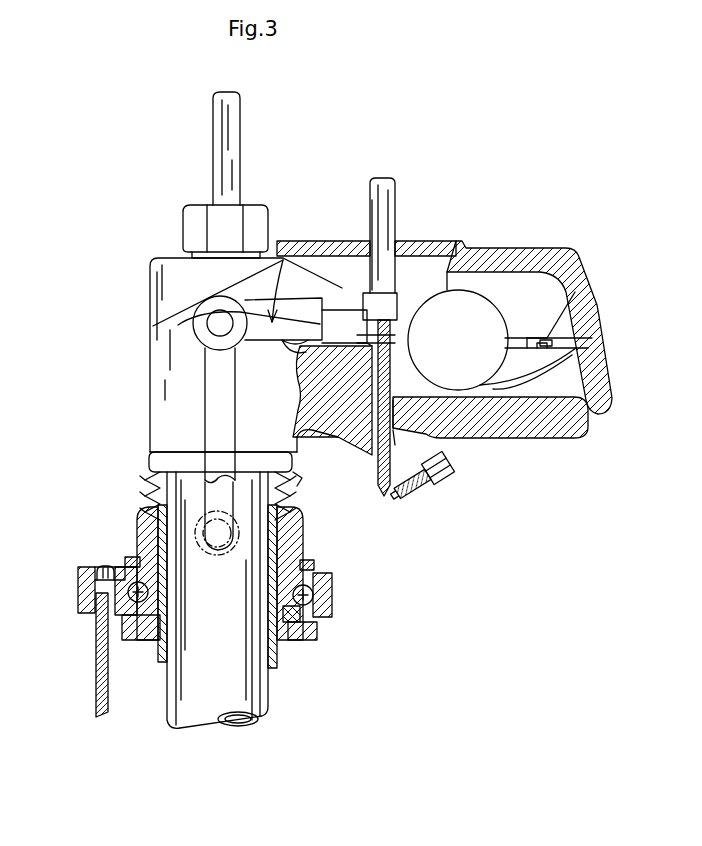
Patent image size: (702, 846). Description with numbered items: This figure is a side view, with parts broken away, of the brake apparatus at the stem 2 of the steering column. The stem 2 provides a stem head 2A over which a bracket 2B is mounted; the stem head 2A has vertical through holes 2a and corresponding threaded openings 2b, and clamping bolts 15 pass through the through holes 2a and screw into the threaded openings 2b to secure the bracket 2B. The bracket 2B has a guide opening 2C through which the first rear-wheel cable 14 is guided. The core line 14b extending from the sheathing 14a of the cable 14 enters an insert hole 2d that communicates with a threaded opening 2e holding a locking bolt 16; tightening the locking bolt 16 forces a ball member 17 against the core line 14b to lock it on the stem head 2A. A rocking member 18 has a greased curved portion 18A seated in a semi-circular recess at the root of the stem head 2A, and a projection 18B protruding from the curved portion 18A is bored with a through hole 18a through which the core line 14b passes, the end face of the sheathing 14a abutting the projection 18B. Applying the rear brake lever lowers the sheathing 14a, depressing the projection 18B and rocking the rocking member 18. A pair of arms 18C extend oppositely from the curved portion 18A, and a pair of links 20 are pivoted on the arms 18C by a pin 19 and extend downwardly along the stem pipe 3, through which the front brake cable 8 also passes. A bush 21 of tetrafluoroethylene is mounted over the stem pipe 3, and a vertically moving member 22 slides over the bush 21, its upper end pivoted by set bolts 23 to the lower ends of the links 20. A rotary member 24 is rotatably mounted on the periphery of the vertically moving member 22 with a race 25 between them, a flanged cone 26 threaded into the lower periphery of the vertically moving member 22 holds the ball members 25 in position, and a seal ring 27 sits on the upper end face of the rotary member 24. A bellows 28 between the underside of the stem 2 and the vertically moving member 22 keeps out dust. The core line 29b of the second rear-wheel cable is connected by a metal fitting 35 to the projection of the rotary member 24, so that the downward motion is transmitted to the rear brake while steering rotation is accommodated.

The stem 2 is at (602, 252).
The stem head 2A is at (536, 440).
The bracket 2B is at (547, 255).
The guide opening 2C is at (395, 250).
The vertical through hole 2a is at (558, 344).
The threaded opening 2b is at (540, 338).
The insert hole 2d is at (448, 432).
The threaded opening 2e is at (410, 482).
The stem pipe 3 is at (190, 490).
The brake cable 8 is at (222, 150).
The first cable 14 is at (396, 192).
The sheathing 14a is at (370, 192).
The core line 14b is at (386, 492).
The clamping bolt 15 is at (556, 346).
The locking bolt 16 is at (448, 475).
The ball member 17 is at (377, 458).
The rocking member 18 is at (284, 255).
The curved portion 18A is at (316, 487).
The projection 18B is at (345, 262).
The arm 18C is at (200, 320).
The through hole 18a is at (400, 320).
The pin 19 is at (210, 312).
The link 20 is at (212, 405).
The bush 21 is at (162, 530).
The vertically moving member 22 is at (142, 545).
The set bolt 23 is at (216, 543).
The rotary member 24 is at (326, 590).
The race 25 is at (316, 612).
The cone 26 is at (304, 636).
The seal ring 27 is at (312, 568).
The bellows 28 is at (142, 488).
The core line 29b is at (97, 683).
The metal fitting 35 is at (80, 582).